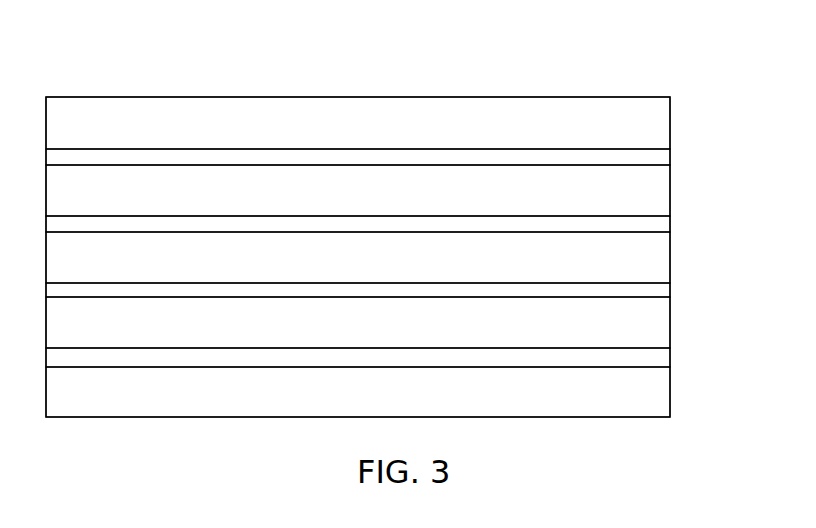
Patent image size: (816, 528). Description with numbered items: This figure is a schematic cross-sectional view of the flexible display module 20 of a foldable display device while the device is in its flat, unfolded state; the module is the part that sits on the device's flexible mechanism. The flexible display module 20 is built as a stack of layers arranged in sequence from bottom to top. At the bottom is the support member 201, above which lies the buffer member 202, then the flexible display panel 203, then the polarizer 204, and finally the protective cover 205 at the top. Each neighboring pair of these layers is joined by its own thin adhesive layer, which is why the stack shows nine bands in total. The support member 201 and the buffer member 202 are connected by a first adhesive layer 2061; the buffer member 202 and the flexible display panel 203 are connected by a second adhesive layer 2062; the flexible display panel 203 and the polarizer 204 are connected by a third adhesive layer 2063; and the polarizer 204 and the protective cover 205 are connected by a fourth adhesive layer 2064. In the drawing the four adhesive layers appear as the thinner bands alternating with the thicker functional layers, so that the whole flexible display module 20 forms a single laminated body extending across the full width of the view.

The flexible display module 20 is at (356, 42).
The support member 201 is at (657, 394).
The first adhesive layer 2061 is at (657, 358).
The buffer member 202 is at (657, 324).
The second adhesive layer 2062 is at (657, 294).
The flexible display panel 203 is at (657, 258).
The third adhesive layer 2063 is at (657, 226).
The polarizer 204 is at (657, 191).
The fourth adhesive layer 2064 is at (657, 158).
The protective cover 205 is at (657, 123).